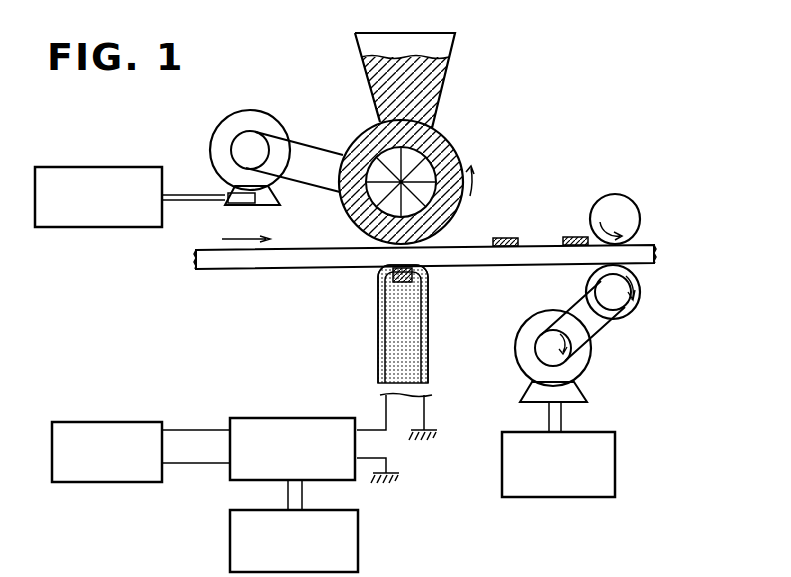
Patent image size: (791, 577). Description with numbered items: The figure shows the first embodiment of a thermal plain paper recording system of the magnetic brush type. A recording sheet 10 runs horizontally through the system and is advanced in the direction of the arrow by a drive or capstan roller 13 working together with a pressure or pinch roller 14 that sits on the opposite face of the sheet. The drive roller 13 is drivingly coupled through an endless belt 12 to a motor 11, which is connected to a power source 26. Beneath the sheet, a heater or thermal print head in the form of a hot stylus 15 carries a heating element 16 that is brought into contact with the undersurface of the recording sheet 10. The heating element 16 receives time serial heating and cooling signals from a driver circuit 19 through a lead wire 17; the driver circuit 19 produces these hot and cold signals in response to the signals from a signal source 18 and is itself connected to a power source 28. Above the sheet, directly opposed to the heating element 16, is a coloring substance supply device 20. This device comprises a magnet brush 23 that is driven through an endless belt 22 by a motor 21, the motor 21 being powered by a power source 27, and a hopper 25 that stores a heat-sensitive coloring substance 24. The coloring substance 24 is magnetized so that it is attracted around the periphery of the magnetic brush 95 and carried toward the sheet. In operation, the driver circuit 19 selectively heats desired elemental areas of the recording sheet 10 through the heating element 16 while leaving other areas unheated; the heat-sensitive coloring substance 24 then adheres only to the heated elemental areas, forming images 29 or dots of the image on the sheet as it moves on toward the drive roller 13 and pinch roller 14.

The recording sheet 10 is at (290, 262).
The motor 11 is at (591, 370).
The endless belt 12 is at (568, 310).
The drive roller 13 is at (642, 291).
The pressure roller 14 is at (615, 194).
The hot stylus 15 is at (419, 338).
The heating element 16 is at (403, 284).
The lead wire 17 is at (379, 338).
The signal source 18 is at (230, 539).
The driver circuit 19 is at (280, 418).
The coloring substance supply device 20 is at (400, 164).
The motor 21 is at (248, 110).
The endless belt 22 is at (322, 140).
The magnet brush 23 is at (450, 138).
The heat-sensitive coloring substance 24 is at (410, 72).
The hopper 25 is at (446, 70).
The power source 26 is at (553, 500).
The power source 27 is at (88, 230).
The power source 28 is at (108, 422).
The images 29 is at (505, 238).
The magnetic brush 95 is at (360, 205).